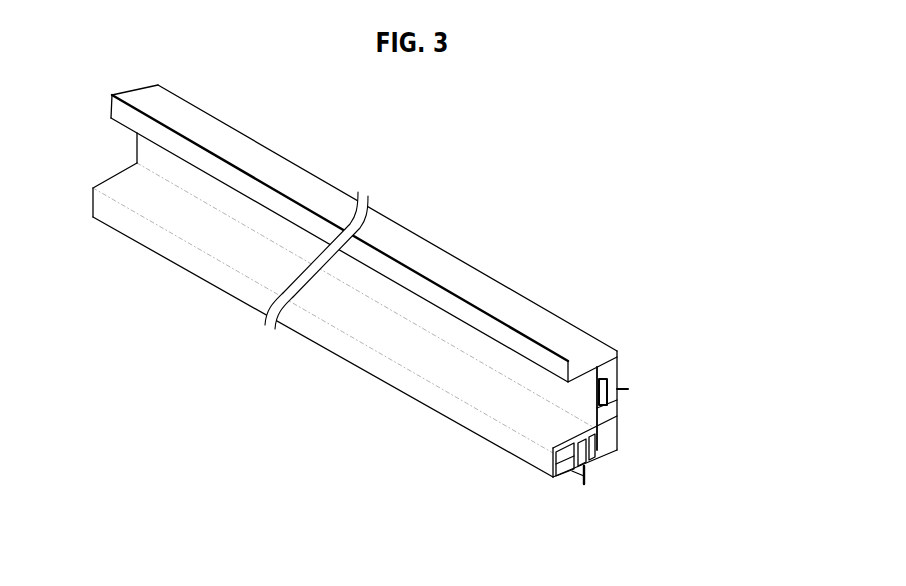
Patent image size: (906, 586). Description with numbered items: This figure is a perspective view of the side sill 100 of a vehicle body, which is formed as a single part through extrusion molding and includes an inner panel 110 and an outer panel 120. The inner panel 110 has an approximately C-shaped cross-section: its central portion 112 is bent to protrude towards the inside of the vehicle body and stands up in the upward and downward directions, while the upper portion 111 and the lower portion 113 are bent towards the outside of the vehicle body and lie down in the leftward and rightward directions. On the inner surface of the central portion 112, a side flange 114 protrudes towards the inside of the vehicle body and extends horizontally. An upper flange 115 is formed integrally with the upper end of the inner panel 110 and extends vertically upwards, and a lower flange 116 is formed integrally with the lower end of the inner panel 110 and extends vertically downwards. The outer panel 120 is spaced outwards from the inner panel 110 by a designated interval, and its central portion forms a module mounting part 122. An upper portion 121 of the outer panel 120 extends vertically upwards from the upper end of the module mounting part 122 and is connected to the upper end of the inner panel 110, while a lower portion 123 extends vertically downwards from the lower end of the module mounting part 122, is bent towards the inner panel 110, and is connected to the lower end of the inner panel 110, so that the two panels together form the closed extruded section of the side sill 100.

The side sill 100 is at (414, 314).
The inner panel 110 is at (423, 281).
The upper portion 111 is at (593, 345).
The central portion 112 is at (613, 416).
The lower portion 113 is at (625, 446).
The side flange 114 is at (620, 388).
The upper flange 115 is at (555, 332).
The lower flange 116 is at (575, 487).
The outer panel 120 is at (344, 320).
The upper portion 121 is at (571, 383).
The module mounting part 122 is at (567, 392).
The lower portion 123 is at (420, 467).